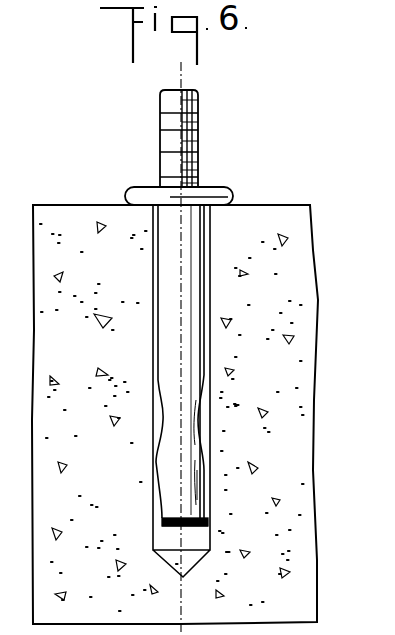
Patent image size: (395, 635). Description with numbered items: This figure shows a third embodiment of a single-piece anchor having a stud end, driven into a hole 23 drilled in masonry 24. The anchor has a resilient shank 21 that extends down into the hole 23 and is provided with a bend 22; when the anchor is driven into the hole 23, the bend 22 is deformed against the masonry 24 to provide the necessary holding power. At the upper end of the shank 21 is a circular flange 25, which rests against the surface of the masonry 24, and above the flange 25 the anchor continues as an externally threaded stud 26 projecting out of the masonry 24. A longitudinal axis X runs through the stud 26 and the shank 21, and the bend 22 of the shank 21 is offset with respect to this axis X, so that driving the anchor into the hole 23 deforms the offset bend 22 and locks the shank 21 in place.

The resilient shank 21 is at (190, 254).
The bend 22 is at (158, 463).
The hole 23 is at (200, 539).
The masonry 24 is at (308, 282).
The circular flange 25 is at (232, 191).
The externally threaded stud 26 is at (198, 124).
The longitudinal axis X is at (182, 385).